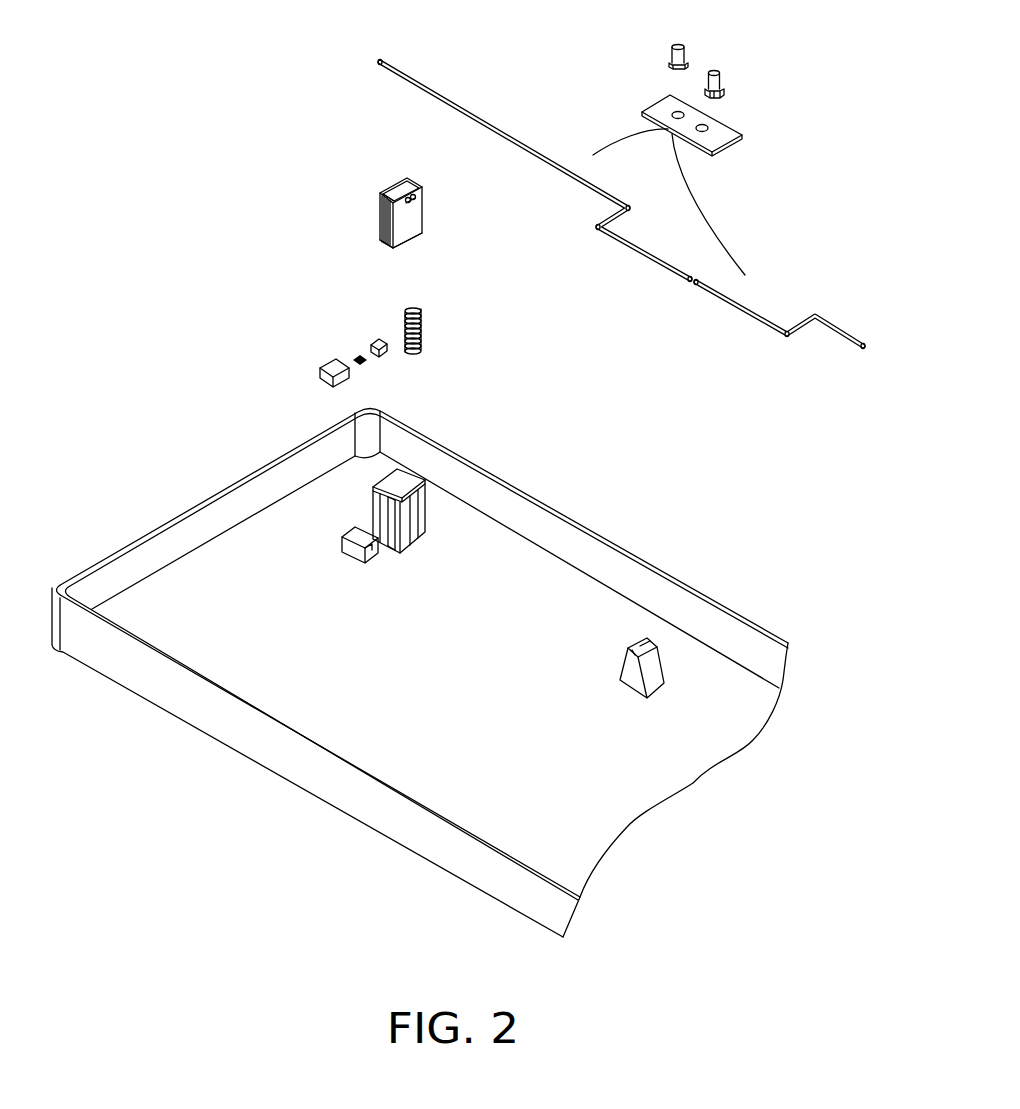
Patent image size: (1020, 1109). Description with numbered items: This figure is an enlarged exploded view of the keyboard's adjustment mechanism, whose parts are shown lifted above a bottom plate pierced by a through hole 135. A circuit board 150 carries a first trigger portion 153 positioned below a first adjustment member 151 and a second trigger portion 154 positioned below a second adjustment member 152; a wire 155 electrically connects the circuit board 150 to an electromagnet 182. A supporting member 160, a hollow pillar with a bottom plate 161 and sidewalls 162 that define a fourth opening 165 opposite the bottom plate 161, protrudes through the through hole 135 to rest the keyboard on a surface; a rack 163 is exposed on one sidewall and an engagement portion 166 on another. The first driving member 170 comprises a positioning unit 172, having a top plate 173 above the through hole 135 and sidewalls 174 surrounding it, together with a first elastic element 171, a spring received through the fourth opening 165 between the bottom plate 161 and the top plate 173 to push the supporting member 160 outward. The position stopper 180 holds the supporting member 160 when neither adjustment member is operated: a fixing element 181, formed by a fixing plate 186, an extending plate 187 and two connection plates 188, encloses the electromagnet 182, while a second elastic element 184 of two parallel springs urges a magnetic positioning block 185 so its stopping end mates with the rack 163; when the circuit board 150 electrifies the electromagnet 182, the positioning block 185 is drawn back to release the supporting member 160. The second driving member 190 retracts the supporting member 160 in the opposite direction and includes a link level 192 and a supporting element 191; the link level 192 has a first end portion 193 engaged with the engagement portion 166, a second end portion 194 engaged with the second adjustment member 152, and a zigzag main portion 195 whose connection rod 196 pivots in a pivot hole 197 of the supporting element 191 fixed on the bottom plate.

The through hole 135 is at (412, 533).
The circuit board 150 is at (696, 110).
The first adjustment member 151 is at (677, 44).
The second adjustment member 152 is at (714, 80).
The first trigger portion 153 is at (676, 113).
The second trigger portion 154 is at (703, 127).
The wire 155 is at (700, 217).
The supporting member 160 is at (424, 219).
The bottom plate 161 is at (403, 247).
The sidewalls 162 is at (408, 222).
The rack 163 is at (380, 222).
The fourth opening 165 is at (388, 188).
The engagement portion 166 is at (413, 200).
The first driving member 170 is at (483, 430).
The first elastic element 171 is at (423, 340).
The positioning unit 172 is at (470, 468).
The top plate 173 is at (405, 477).
The sidewalls 174 is at (460, 492).
The position stopper 180 is at (291, 415).
The fixing element 181 is at (354, 522).
The electromagnet 182 is at (333, 367).
The second elastic element 184 is at (354, 355).
The positioning block 185 is at (329, 312).
The fixing plate 186 is at (347, 553).
The extending plate 187 is at (360, 552).
The connection plates 188 is at (375, 563).
The second driving member 190 is at (742, 488).
The supporting element 191 is at (641, 637).
The link level 192 is at (699, 286).
The first end portion 193 is at (378, 63).
The second end portion 194 is at (689, 282).
The main portion 195 is at (491, 202).
The connection rod 196 is at (621, 239).
The pivot hole 197 is at (637, 698).